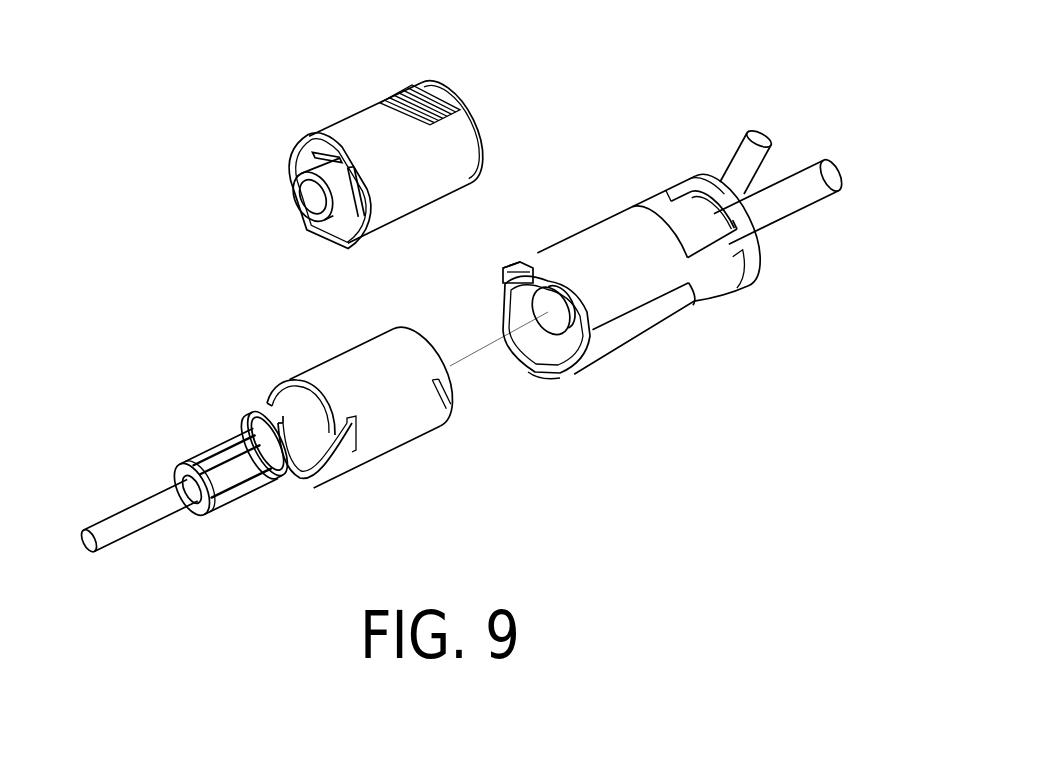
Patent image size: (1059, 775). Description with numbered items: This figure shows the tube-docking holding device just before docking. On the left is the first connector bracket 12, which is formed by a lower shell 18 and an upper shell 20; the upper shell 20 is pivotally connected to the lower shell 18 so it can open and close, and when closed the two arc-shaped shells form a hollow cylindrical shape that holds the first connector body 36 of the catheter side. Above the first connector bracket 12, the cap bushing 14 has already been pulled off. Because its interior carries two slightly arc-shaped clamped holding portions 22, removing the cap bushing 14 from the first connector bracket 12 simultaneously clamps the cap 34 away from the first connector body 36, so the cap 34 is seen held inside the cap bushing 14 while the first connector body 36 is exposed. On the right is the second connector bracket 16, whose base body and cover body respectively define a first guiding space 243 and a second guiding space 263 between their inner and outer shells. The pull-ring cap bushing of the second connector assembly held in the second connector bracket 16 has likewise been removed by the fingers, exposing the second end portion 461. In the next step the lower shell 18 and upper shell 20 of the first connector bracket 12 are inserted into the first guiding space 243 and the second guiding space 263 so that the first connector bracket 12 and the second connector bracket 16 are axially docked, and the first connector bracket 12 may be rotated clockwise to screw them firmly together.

The first connector bracket 12 is at (432, 455).
The cap bushing 14 is at (363, 128).
The second connector bracket 16 is at (708, 332).
The lower shell 18 is at (375, 458).
The upper shell 20 is at (345, 372).
The clamped holding portions 22 is at (372, 200).
The cap 34 is at (310, 202).
The first connector body 36 is at (270, 470).
The first guiding space 243 is at (557, 370).
The second guiding space 263 is at (518, 268).
The second end portion 461 is at (582, 343).